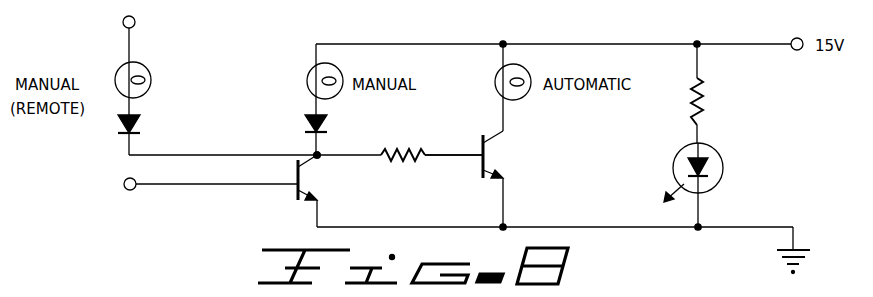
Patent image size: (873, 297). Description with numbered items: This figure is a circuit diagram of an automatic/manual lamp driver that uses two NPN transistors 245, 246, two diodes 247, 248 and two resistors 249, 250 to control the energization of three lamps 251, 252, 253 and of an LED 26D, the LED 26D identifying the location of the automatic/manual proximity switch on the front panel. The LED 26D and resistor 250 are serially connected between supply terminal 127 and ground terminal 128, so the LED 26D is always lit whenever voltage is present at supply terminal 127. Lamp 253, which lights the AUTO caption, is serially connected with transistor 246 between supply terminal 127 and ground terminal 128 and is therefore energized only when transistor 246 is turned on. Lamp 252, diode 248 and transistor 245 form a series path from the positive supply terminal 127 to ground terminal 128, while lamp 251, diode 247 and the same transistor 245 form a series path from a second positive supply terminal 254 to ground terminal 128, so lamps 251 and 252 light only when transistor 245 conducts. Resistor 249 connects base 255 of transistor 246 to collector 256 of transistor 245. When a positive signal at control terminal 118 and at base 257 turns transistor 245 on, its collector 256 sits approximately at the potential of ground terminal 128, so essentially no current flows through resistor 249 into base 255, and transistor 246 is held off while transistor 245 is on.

The second positive supply terminal 254 is at (124, 27).
The lamp 251 is at (147, 96).
The diode 247 is at (134, 130).
The control terminal 118 is at (136, 190).
The base 257 is at (228, 187).
The NPN transistor 245 is at (303, 181).
The collector 256 is at (319, 158).
The lamp 252 is at (337, 97).
The diode 248 is at (322, 131).
The resistor 249 is at (427, 148).
The base 255 is at (459, 158).
The NPN transistor 246 is at (489, 156).
The lamp 253 is at (525, 97).
The supply terminal 127 is at (796, 37).
The resistor 250 is at (701, 107).
The LED 26D is at (721, 155).
The ground terminal 128 is at (803, 250).